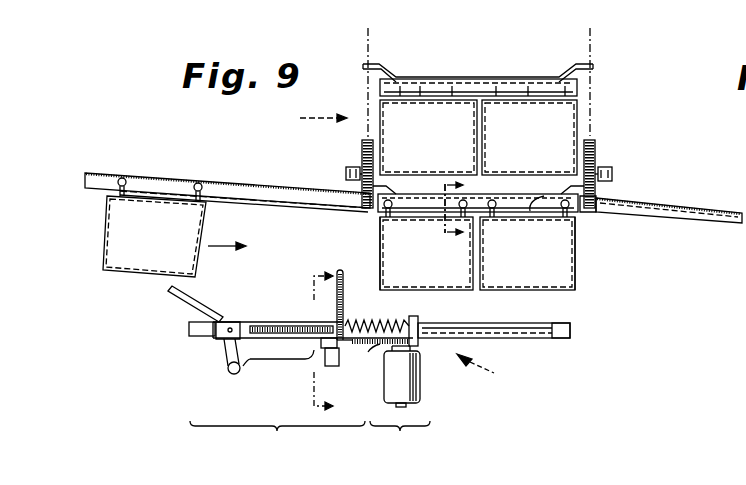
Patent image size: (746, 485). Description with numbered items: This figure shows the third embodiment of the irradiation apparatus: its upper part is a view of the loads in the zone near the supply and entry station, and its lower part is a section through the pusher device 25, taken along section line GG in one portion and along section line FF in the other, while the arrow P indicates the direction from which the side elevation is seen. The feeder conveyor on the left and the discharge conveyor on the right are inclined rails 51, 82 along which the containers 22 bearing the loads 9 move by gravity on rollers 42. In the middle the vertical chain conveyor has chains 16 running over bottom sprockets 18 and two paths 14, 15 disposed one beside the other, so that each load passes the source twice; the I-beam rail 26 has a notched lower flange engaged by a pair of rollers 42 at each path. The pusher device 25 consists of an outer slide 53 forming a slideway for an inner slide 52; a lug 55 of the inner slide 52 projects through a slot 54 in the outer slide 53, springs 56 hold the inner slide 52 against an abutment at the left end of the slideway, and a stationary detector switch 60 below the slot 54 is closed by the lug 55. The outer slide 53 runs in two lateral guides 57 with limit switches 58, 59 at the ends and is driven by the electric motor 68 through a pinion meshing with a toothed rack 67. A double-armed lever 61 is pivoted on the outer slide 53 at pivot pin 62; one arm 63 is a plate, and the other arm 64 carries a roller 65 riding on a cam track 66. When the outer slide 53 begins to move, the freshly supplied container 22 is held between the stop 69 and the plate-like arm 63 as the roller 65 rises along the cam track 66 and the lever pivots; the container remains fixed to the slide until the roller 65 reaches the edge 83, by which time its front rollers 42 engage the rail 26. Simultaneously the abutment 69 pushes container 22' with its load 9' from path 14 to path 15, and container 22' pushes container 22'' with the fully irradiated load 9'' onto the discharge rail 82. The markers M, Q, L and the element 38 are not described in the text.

The load 9 is at (112, 282).
The load in the first path 9' is at (426, 253).
The fully irradiated load 9'' is at (553, 253).
The first path of the conveyor 14 is at (428, 100).
The second path of the conveyor 15 is at (529, 100).
The chain 16 is at (593, 50).
The bottom sprocket 18 is at (596, 151).
The load container 22 is at (133, 227).
The load container on the first path 22' is at (441, 268).
The load container with the irradiated load 22'' is at (607, 253).
The pusher device 25 is at (492, 371).
The I-beam rail 26 is at (549, 192).
The adjusting knob 38 is at (614, 176).
The roller 42 is at (495, 203).
The inclined feeder rail 51 is at (276, 191).
The inner slide 52 is at (289, 326).
The outer slide 53 is at (276, 322).
The slot 54 is at (346, 346).
The projecting lug 55 is at (333, 305).
The spring 56 is at (377, 316).
The lateral guide 57 is at (509, 323).
The electric limit switch 58 is at (185, 332).
The electric limit switch 59 is at (565, 339).
The stationary electric detector switch 60 is at (332, 367).
The double-armed lever 61 is at (222, 316).
The pivot pin 62 is at (241, 320).
The plate-like lever arm 63 is at (186, 301).
The lever arm 64 is at (226, 353).
The roller 65 is at (229, 372).
The cam track 66 is at (252, 360).
The toothed rack 67 is at (383, 350).
The electric motor 68 is at (400, 378).
The stop / abutment 69 is at (397, 240).
The inclined discharge rail 82 is at (714, 217).
The edge of the cam track 83 is at (282, 368).
The viewing direction arrow P is at (323, 105).
The section line M- M is at (445, 210).
The section line Q- Q is at (320, 343).
The guide surface L is at (368, 267).
The section line G—G GG is at (277, 443).
The section line F—F FF is at (400, 443).